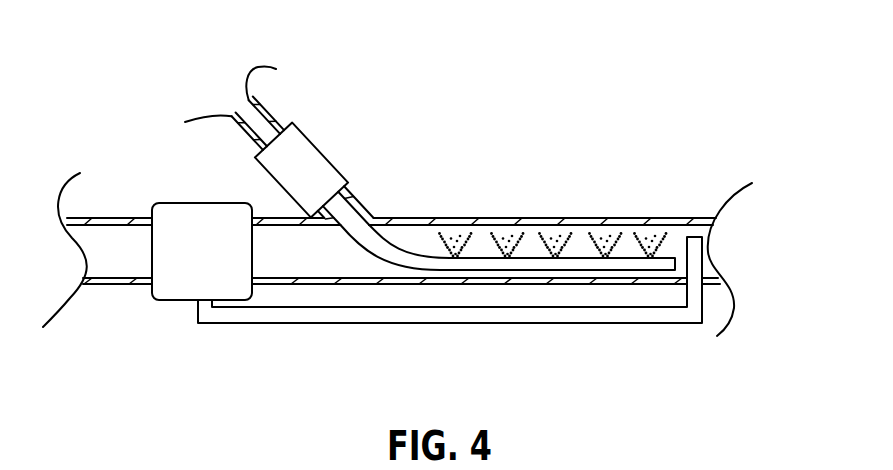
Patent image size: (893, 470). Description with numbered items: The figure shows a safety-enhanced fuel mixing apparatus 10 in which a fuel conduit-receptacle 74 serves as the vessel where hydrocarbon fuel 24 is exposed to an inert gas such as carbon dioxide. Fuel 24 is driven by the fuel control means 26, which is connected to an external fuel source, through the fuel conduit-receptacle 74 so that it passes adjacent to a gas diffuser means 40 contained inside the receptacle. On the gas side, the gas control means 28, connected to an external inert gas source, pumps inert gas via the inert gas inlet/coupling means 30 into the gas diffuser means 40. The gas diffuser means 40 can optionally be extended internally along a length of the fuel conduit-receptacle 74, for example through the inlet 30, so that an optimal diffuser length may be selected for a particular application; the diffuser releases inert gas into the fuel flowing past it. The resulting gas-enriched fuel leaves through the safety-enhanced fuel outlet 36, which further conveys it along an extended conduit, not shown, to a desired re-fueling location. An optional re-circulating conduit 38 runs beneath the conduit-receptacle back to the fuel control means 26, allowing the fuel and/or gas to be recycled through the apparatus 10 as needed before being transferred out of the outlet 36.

The mixing apparatus 10 is at (667, 120).
The fuel 24 is at (350, 253).
The fuel control means 26 is at (177, 280).
The gas control means 28 is at (317, 157).
The inert gas inlet/coupling means 30 is at (400, 243).
The safety-enhanced fuel outlet 36 is at (710, 263).
The re-circulating conduit 38 is at (520, 313).
The gas diffuser means 40 is at (483, 258).
The fuel conduit-receptacle 74 is at (632, 219).